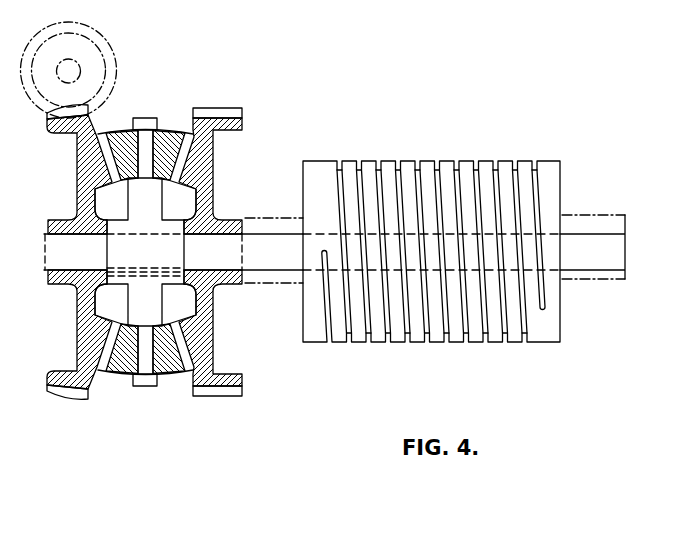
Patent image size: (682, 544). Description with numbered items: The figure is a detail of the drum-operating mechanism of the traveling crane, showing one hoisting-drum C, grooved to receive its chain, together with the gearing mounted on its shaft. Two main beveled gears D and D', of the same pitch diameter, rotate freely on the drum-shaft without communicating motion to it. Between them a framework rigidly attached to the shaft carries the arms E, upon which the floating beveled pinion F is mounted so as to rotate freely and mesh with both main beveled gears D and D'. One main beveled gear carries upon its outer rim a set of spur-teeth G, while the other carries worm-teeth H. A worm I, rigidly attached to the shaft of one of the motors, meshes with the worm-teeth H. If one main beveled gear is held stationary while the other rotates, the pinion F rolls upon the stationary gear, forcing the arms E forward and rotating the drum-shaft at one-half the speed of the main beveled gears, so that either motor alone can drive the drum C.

The hoisting-drum C is at (431, 263).
The main beveled gear D is at (118, 235).
The main beveled gear D' is at (172, 231).
The arms E is at (145, 252).
The beveled pinion F is at (166, 124).
The spur-teeth G is at (229, 252).
The worm-teeth H is at (67, 402).
The worm I is at (69, 70).